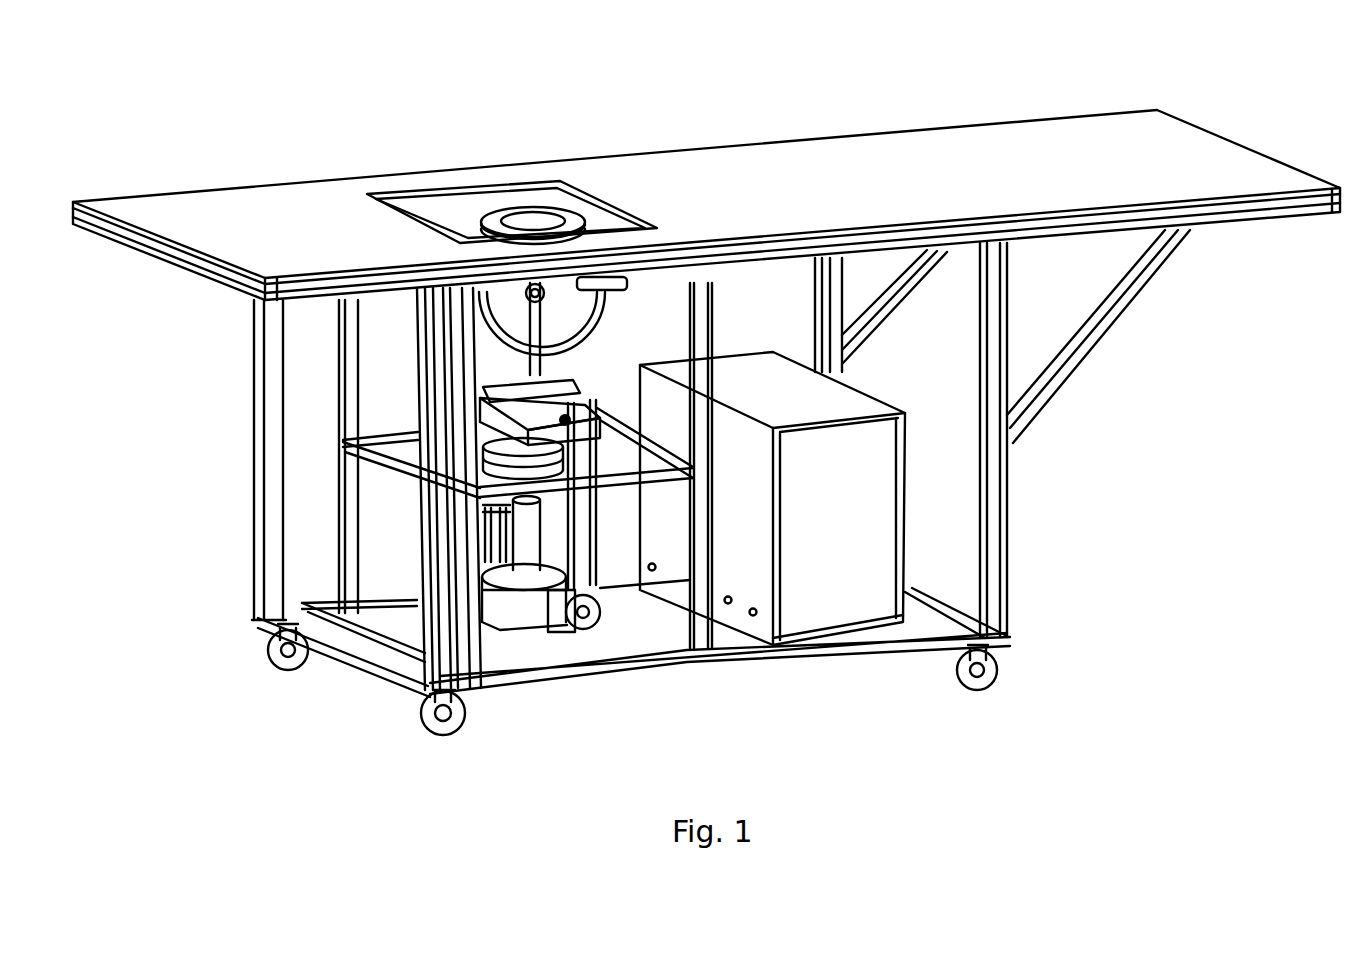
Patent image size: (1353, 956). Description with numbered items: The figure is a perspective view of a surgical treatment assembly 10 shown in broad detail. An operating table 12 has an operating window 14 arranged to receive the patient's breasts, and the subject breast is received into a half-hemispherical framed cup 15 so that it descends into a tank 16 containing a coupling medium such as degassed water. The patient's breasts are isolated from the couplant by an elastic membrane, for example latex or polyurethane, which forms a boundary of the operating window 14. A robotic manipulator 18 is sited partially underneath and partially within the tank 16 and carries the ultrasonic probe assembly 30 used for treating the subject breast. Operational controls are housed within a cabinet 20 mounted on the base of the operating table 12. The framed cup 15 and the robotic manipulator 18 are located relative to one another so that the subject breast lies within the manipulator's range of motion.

The surgical treatment assembly 10 is at (396, 118).
The operating table 12 is at (880, 158).
The operating window 14 is at (462, 212).
The half-hemispherical framed cup 15 is at (530, 212).
The tank 16 is at (372, 348).
The robotic manipulator 18 is at (497, 383).
The cabinet 20 is at (837, 515).
The ultrasonic probe assembly 30 is at (627, 283).